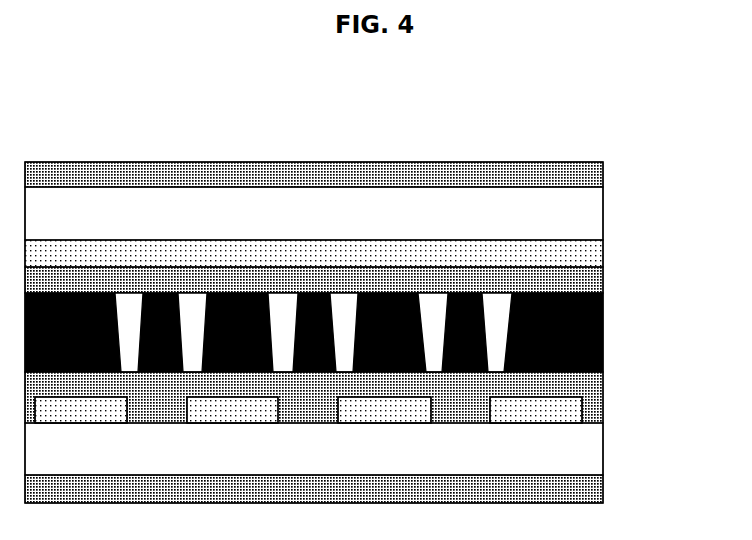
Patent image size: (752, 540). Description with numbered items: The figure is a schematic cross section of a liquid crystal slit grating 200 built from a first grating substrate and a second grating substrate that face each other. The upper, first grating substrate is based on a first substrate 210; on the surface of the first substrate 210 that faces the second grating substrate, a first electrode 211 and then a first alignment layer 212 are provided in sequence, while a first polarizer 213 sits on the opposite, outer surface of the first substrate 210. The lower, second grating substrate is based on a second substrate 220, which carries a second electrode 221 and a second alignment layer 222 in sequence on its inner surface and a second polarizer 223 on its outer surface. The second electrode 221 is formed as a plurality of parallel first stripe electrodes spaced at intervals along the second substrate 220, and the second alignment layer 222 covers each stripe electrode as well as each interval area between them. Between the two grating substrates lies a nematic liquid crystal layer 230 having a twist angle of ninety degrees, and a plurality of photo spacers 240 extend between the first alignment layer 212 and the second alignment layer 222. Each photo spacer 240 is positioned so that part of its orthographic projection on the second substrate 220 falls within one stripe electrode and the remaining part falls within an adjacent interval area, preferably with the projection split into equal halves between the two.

The liquid crystal slit grating 200 is at (176, 149).
The first substrate 210 is at (583, 217).
The first electrode 211 is at (586, 247).
The first alignment layer 212 is at (586, 273).
The first polarizer 213 is at (583, 172).
The second substrate 220 is at (586, 445).
The second electrode 221 is at (560, 410).
The second alignment layer 222 is at (587, 388).
The second polarizer 223 is at (589, 484).
The nematic liquid crystal layer 230 is at (606, 325).
The photo spacer 240 is at (336, 303).